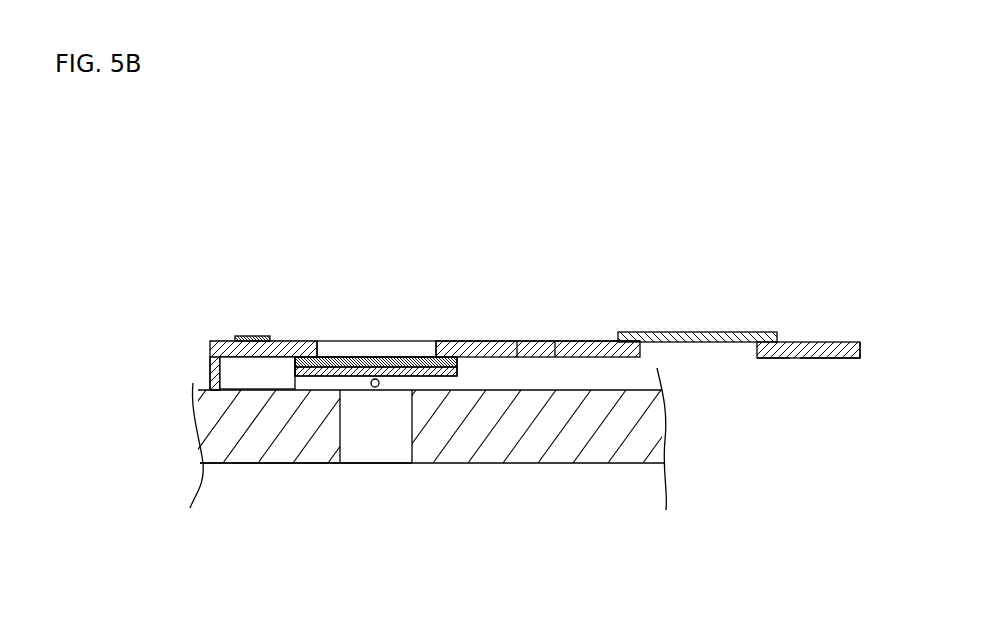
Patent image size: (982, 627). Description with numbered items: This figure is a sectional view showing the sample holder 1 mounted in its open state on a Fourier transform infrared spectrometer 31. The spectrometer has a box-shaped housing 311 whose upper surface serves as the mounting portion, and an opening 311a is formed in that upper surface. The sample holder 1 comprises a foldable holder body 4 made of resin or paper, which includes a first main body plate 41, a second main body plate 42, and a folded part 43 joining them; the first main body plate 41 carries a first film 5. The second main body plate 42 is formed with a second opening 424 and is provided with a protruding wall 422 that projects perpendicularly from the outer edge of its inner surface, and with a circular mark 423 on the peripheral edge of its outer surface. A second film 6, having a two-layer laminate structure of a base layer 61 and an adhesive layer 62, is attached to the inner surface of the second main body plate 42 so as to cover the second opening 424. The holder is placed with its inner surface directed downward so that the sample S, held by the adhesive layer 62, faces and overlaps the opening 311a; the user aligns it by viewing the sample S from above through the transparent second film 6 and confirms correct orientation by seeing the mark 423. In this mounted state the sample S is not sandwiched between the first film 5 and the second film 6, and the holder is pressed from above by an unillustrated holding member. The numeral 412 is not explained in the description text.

The sample holder 1 is at (607, 292).
The holder body 4 is at (806, 343).
The first main body plate 41 is at (836, 358).
The substrate end portion 412 is at (754, 358).
The first film 5 is at (735, 332).
The second film 6 is at (343, 357).
The base layer 61 is at (455, 361).
The adhesive layer 62 is at (293, 372).
The Fourier transform infrared spectrometer 31 is at (597, 463).
The housing 311 is at (252, 453).
The opening 311a is at (410, 457).
The sample S is at (372, 387).
The second main body plate 42 is at (306, 341).
The protruding wall 422 is at (210, 358).
The mark 423 is at (246, 336).
The second opening 424 is at (430, 341).
The folded part 43 is at (534, 341).